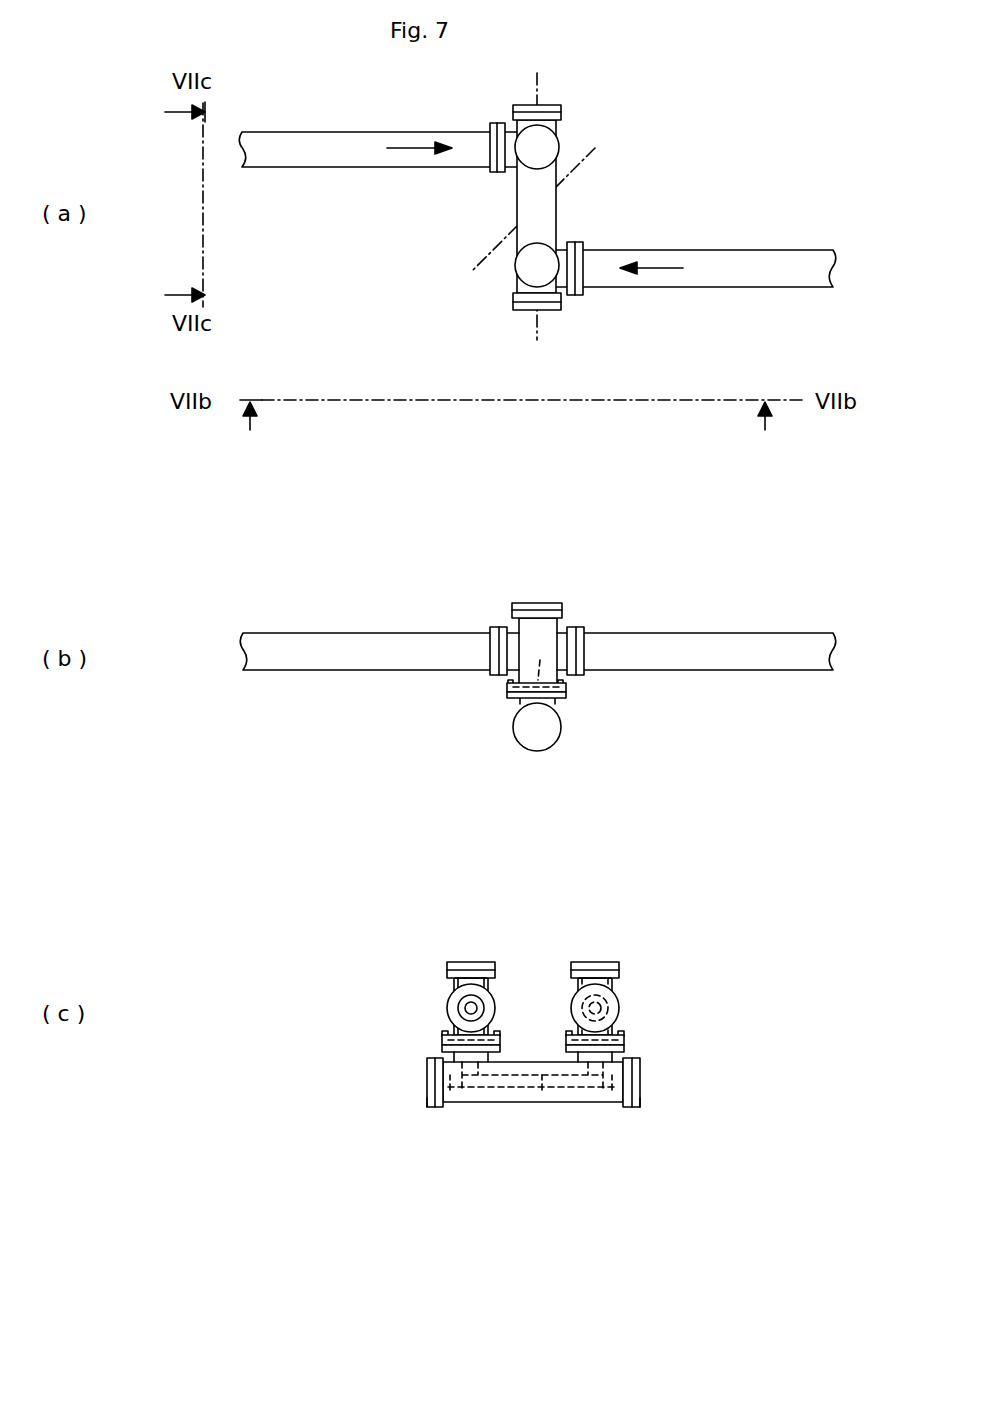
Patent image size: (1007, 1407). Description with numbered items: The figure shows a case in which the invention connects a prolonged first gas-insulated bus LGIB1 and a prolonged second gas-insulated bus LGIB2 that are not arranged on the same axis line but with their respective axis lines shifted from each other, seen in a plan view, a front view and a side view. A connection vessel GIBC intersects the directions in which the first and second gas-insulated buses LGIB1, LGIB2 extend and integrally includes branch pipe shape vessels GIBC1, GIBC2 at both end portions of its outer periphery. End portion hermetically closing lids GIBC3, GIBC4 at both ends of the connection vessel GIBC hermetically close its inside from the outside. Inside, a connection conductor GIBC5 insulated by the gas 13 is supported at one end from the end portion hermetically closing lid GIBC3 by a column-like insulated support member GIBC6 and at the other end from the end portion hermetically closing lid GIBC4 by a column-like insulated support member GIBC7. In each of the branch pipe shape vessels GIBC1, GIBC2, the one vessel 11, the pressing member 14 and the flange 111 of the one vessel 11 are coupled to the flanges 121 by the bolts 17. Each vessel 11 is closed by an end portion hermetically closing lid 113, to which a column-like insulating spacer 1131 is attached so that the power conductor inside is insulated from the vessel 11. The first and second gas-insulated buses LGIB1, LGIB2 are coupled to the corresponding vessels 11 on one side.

The first gas-insulated bus LGIB1 is at (350, 132).
The second gas-insulated bus LGIB2 is at (775, 250).
The connection vessel GIBC is at (556, 197).
The branch pipe shape vessel GIBC1 is at (427, 1078).
The branch pipe shape vessel GIBC2 is at (640, 1078).
The end portion hermetically closing lid GIBC3 is at (427, 1098).
The end portion hermetically closing lid GIBC4 is at (640, 1098).
The connection conductor GIBC5 is at (520, 705).
The column-like insulated support member GIBC6 is at (450, 1090).
The column-like insulated support member GIBC7 is at (612, 1090).
The vessel 11 is at (519, 630).
The flange 111 is at (575, 1025).
The end portion hermetically closing lid 113 is at (560, 146).
The column-like insulating spacer 1131 is at (453, 982).
The gas 13 is at (567, 1093).
The pressing member 14 is at (507, 688).
The bolt 17 is at (508, 682).
The flange 121 is at (507, 695).